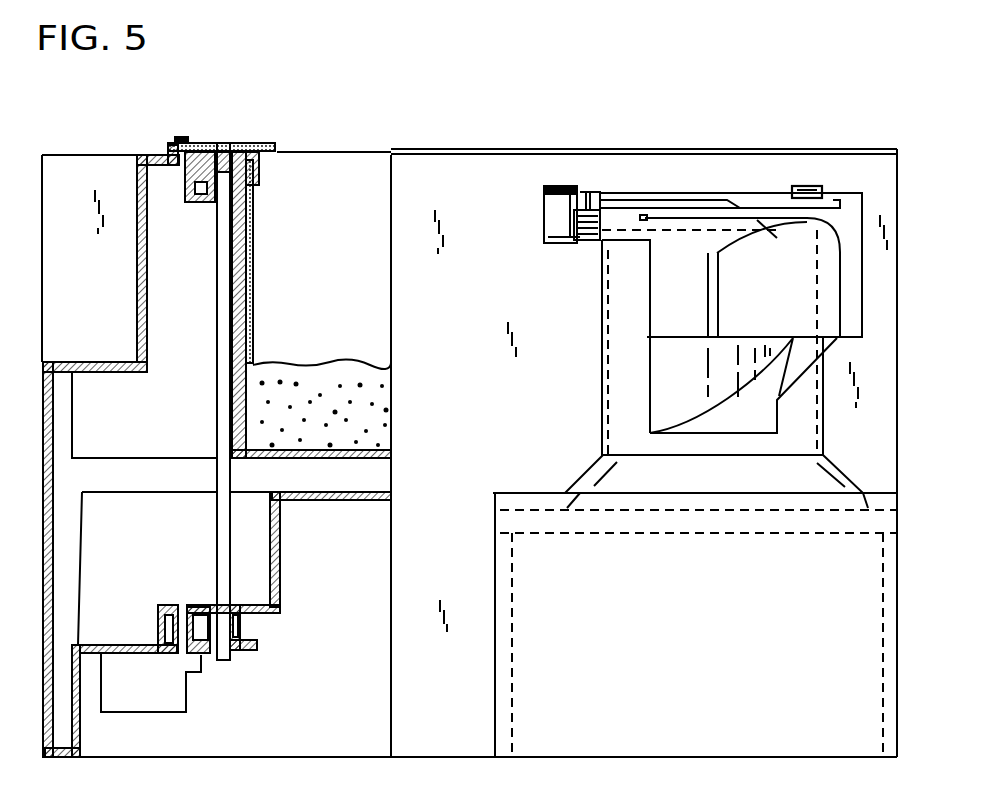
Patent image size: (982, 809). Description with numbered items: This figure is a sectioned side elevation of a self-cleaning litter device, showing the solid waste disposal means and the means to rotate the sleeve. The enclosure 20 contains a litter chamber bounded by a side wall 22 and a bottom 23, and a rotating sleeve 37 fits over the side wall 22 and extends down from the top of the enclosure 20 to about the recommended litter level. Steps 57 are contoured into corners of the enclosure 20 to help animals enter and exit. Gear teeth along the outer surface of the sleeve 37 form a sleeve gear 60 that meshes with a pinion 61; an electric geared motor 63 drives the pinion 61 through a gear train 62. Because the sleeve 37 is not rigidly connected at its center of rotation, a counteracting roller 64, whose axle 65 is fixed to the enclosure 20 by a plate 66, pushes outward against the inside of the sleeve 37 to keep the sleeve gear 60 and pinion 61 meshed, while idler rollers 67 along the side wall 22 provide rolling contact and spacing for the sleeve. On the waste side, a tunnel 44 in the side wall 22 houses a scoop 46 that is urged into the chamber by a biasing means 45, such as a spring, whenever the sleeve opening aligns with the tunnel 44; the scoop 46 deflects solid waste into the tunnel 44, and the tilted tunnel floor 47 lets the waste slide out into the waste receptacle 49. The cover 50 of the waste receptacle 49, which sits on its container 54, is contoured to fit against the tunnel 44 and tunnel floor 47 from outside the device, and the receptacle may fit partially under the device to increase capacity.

The enclosure 20 is at (472, 215).
The side wall 22 is at (244, 320).
The bottom 23 is at (296, 450).
The sleeve 37 is at (254, 274).
The tunnel 44 is at (703, 320).
The biasing means 45 is at (594, 238).
The scoop 46 is at (838, 228).
The tunnel floor 47 is at (761, 423).
The waste receptacle 49 is at (694, 642).
The cover 50 is at (592, 478).
The container 54 is at (728, 642).
The steps 57 is at (112, 365).
The sleeve gear 60 is at (246, 192).
The pinion 61 is at (196, 152).
The gear train 62 is at (208, 650).
The electric geared motor 63 is at (150, 688).
The counteracting roller 64 is at (262, 168).
The axle 65 is at (250, 143).
The plate 66 is at (221, 157).
The idler rollers 67 is at (800, 188).